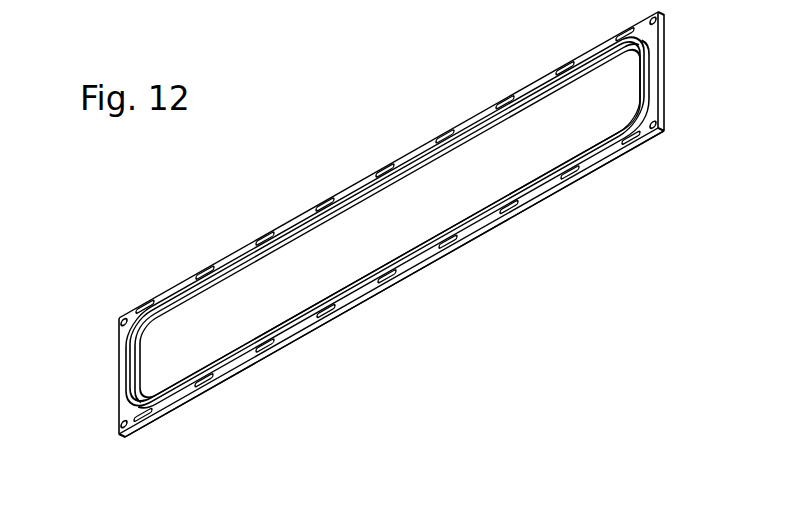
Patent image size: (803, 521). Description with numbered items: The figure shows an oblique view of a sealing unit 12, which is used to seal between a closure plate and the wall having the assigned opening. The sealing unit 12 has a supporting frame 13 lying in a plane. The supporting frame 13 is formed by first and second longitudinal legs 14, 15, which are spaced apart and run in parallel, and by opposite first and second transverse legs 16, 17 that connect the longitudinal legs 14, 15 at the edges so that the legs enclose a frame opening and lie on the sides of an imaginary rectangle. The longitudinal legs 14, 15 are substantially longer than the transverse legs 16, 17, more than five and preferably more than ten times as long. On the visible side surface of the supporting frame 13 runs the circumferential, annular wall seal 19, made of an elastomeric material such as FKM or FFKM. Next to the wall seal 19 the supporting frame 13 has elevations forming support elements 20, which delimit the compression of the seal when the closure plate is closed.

The sealing unit 12 is at (173, 440).
The supporting frame 13 is at (248, 361).
The first longitudinal leg 14 is at (352, 187).
The second longitudinal leg 15 is at (417, 267).
The first transverse leg 16 is at (120, 379).
The second transverse leg 17 is at (651, 77).
The wall seal 19 is at (478, 214).
The support elements 20 is at (565, 68).